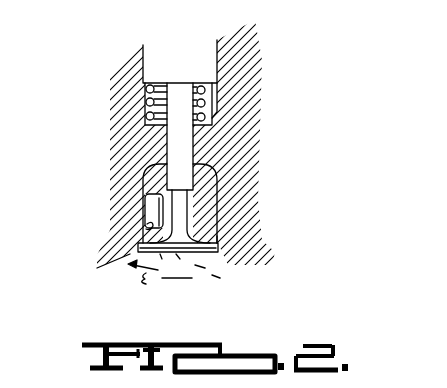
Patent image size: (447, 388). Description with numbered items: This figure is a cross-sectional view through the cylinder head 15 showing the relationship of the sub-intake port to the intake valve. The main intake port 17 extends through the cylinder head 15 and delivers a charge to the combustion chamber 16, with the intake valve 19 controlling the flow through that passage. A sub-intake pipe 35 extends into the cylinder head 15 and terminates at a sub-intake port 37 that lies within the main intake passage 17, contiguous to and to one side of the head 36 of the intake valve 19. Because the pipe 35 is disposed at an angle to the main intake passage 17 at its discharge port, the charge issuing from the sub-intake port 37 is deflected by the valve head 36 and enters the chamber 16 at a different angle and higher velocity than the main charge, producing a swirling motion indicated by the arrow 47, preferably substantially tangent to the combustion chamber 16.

The cylinder head 15 is at (125, 243).
The combustion chamber 16 is at (222, 248).
The intake port 17 is at (215, 189).
The intake valve 19 is at (192, 142).
The sub-intake pipe 35 is at (143, 203).
The head of the intake valve 36 is at (210, 240).
The sub-intake port 37 is at (145, 225).
The arrow indicating swirling direction 47 is at (152, 272).